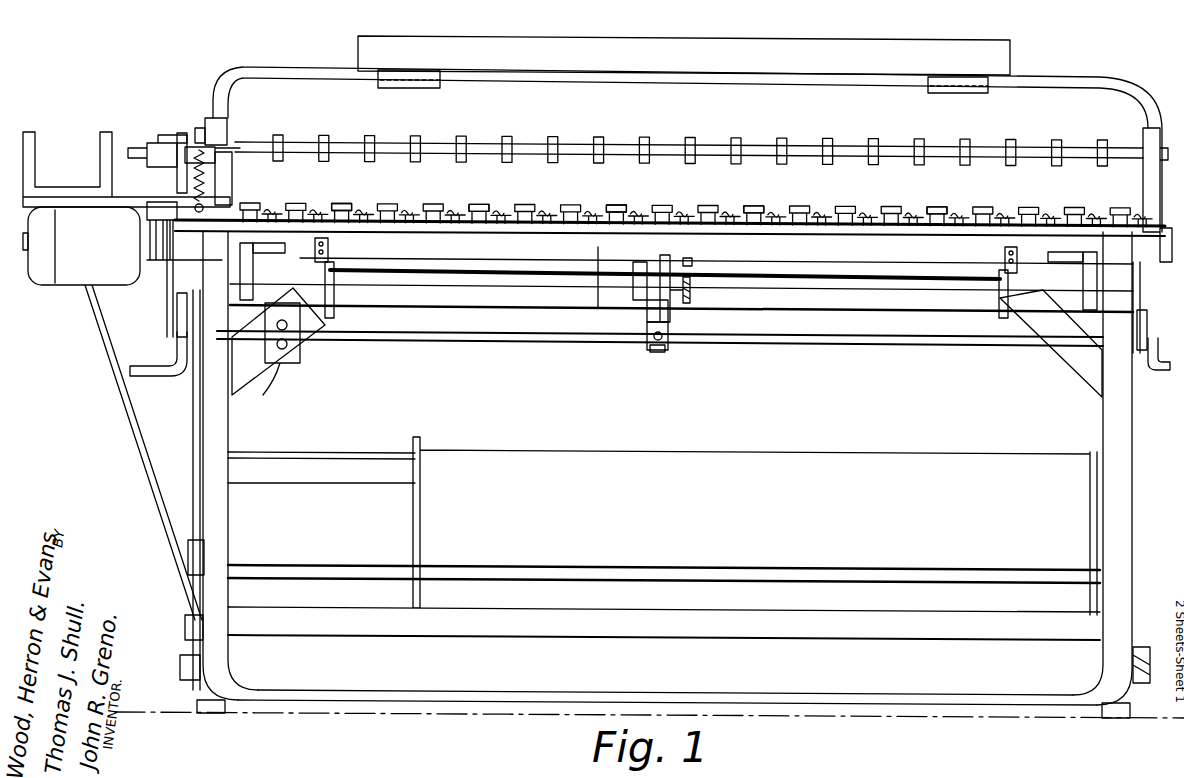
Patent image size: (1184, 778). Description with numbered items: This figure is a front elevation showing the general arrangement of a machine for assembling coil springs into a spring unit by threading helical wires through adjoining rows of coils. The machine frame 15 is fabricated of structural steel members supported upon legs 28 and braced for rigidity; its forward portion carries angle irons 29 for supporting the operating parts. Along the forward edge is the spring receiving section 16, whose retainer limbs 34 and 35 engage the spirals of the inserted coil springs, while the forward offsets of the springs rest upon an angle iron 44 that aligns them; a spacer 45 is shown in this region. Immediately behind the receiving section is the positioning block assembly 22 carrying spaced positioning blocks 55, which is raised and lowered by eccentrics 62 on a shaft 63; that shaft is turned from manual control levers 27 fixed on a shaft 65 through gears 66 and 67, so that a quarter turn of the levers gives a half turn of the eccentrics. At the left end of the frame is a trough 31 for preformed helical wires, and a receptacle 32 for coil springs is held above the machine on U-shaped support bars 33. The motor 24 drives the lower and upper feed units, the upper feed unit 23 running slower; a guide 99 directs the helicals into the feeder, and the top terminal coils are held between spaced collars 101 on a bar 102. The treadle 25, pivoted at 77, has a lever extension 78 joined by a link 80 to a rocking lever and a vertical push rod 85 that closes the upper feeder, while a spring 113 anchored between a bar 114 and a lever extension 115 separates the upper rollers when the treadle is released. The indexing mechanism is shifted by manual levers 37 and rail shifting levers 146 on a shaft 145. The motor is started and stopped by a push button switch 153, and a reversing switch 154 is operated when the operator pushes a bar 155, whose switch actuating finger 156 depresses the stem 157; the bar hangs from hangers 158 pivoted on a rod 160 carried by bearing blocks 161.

The frame 15 is at (239, 544).
The spring receiving section 16 is at (645, 200).
The positioning block assembly 22 is at (760, 205).
The upper feed unit 23 is at (205, 120).
The motor 24 is at (65, 270).
The treadle 25 is at (952, 700).
The manual control lever 27 is at (273, 250).
The legs 28 is at (213, 437).
The angle irons 29 is at (598, 305).
The trough 31 is at (37, 147).
The receptacle 32 is at (790, 40).
The U-shaped support bars 33 is at (1056, 77).
The retainer limb 34 is at (457, 205).
The retainer limb 35 is at (600, 205).
The manual lever 37 is at (157, 365).
The angle iron 44 is at (517, 230).
The spacer block 45 is at (353, 207).
The positioning blocks 55 is at (938, 212).
The eccentrics 62 is at (200, 268).
The eccentric shaft 63 is at (1042, 280).
The shaft 65 is at (817, 287).
The gear 66 is at (693, 300).
The gear 67 is at (688, 262).
The pivots 77 is at (182, 662).
The lever extension 78 is at (182, 635).
The link 80 is at (190, 552).
The vertical push rod 85 is at (193, 422).
The guide 99 is at (141, 148).
The collars 101 is at (372, 140).
The bar 102 is at (753, 146).
The spring 113 is at (205, 177).
The bar 114 is at (207, 200).
The lever extension 115 is at (200, 130).
The shaft 145 is at (450, 341).
The rail shifting levers 146 is at (175, 308).
The push button switch 153 is at (292, 353).
The reversing switch 154 is at (658, 352).
The bar 155 is at (887, 314).
The switch actuating finger 156 is at (670, 320).
The stem 157 is at (670, 347).
The hangers 158 is at (350, 307).
The rod 160 is at (486, 272).
The bearing blocks 161 is at (328, 252).